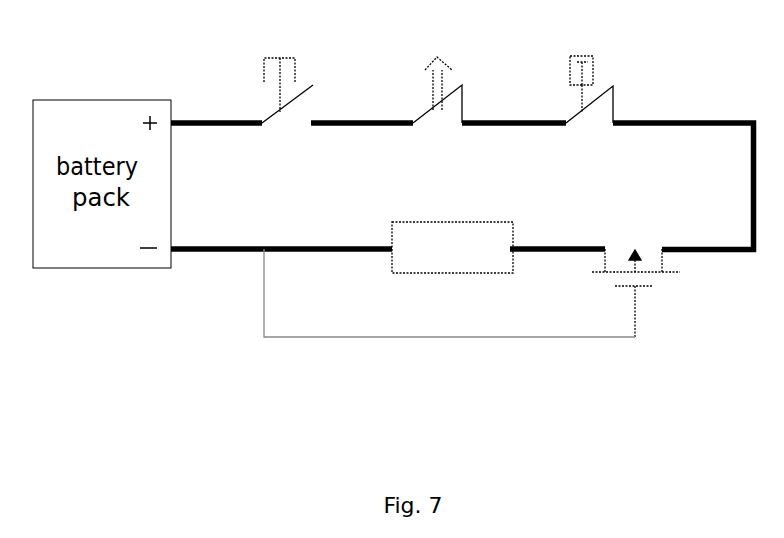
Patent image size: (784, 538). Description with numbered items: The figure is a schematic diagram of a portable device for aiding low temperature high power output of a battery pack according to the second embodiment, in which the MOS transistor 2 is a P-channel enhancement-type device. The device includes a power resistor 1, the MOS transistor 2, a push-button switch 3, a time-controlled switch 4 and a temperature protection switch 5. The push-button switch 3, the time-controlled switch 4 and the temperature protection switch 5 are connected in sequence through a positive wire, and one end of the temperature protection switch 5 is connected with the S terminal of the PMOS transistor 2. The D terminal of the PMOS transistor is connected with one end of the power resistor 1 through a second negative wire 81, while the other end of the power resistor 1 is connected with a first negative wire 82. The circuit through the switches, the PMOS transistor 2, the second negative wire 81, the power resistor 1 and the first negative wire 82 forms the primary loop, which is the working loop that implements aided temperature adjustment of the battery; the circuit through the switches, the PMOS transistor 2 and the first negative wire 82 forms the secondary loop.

The power resistor 1 is at (453, 273).
The MOS transistor 2 is at (653, 286).
The push-button switch 3 is at (272, 112).
The time-controlled switch 4 is at (427, 112).
The temperature protection switch 5 is at (577, 110).
The second negative wire 81 is at (558, 251).
The first negative wire 82 is at (323, 251).